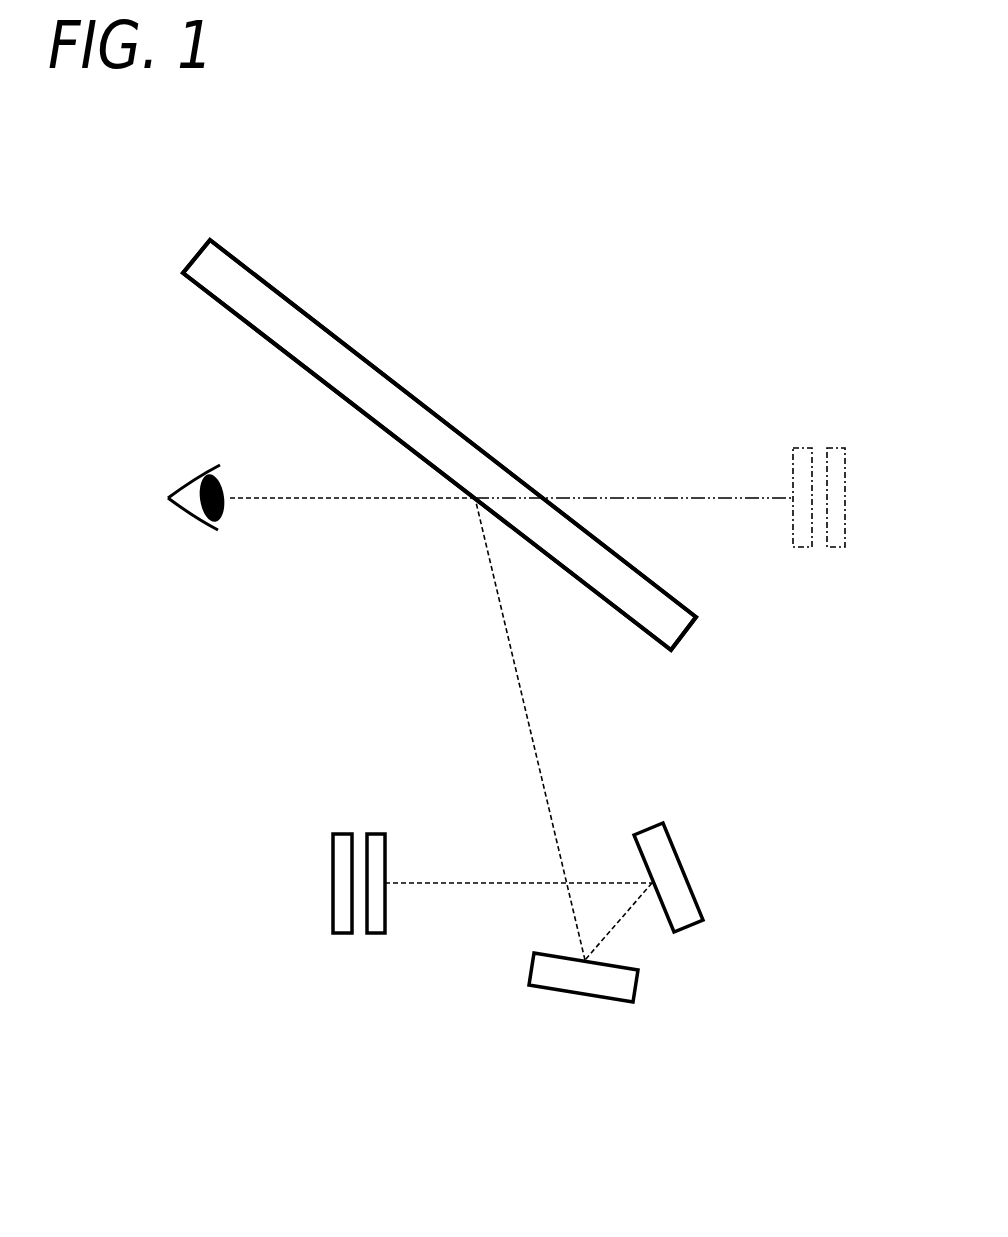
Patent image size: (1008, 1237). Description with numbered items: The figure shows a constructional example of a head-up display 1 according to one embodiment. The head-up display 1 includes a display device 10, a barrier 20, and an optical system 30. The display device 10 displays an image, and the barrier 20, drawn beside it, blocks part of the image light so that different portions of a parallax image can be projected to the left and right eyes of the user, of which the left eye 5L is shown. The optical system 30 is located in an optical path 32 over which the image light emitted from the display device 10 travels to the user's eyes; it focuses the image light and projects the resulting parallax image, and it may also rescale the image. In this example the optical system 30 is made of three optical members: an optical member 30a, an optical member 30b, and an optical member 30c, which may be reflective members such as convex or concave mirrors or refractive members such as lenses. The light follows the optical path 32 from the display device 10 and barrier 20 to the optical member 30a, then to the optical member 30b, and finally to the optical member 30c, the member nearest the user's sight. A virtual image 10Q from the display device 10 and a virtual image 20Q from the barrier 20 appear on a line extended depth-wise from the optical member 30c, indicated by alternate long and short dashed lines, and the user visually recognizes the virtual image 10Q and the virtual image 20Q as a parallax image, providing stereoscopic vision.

The head-up display 1 is at (542, 322).
The left eye 5L is at (207, 515).
The display device 10 is at (343, 934).
The barrier 20 is at (376, 934).
The virtual image from the display device 10Q is at (836, 447).
The virtual image from the barrier 20Q is at (800, 447).
The optical system 30 is at (439, 445).
The optical member 30a is at (577, 995).
The optical member 30b is at (680, 862).
The optical member 30c is at (318, 338).
The optical path 32 is at (515, 678).